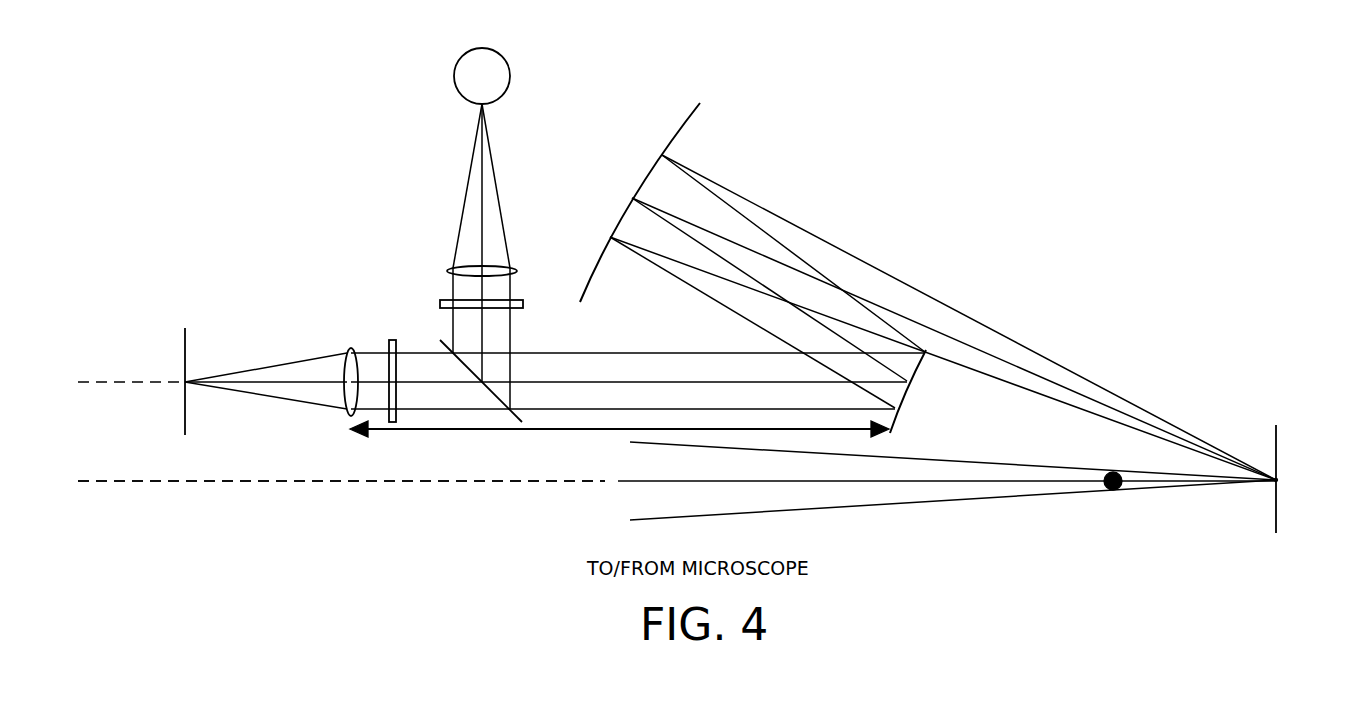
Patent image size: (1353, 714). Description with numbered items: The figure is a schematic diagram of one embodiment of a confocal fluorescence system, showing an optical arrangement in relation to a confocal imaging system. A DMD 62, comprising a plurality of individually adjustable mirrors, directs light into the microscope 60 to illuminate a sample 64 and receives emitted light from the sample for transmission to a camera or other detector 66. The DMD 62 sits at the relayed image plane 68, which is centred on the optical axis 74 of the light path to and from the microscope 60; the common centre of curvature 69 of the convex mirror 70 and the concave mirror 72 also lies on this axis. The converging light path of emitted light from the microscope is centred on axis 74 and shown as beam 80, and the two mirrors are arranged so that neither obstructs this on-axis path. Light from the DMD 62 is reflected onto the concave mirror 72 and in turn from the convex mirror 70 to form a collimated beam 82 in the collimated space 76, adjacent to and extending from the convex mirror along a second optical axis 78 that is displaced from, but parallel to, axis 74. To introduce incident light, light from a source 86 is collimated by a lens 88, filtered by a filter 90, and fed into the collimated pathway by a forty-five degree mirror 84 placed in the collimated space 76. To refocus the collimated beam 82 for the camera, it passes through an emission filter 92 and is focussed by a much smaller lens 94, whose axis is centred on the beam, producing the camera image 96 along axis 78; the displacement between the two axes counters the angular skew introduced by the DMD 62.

The microscope 60 is at (170, 520).
The DMD 62 is at (1277, 493).
The sample 64 is at (80, 480).
The camera or other detector 66 is at (184, 418).
The relayed image plane 68 is at (1277, 427).
The common centre of curvature 69 is at (1106, 474).
The convex mirror 70 is at (905, 397).
The concave mirror 72 is at (677, 132).
The optical axis 74 is at (268, 483).
The collimated space 76 is at (557, 431).
The optical axis 78 is at (100, 380).
The beam 80 is at (905, 506).
The collimated beam 82 is at (652, 352).
The 45° mirror 84 is at (441, 341).
The source 86 is at (454, 77).
The lens 88 is at (512, 266).
The filter 90 is at (440, 303).
The emission filter 92 is at (391, 340).
The lens 94 is at (347, 350).
The camera image 96 is at (186, 381).